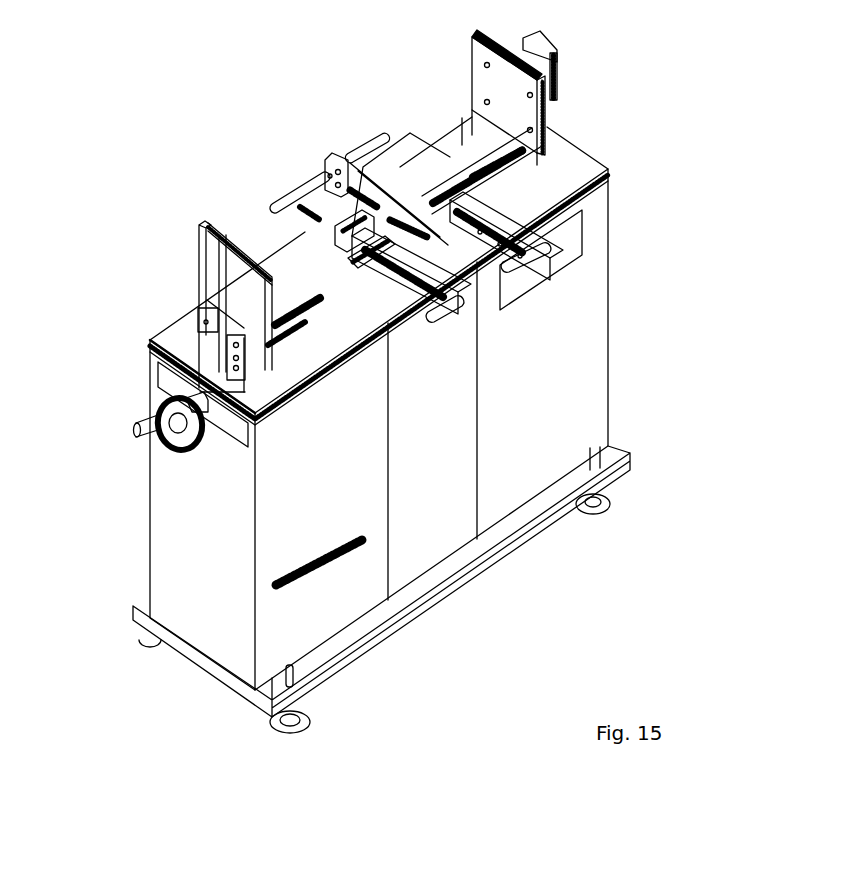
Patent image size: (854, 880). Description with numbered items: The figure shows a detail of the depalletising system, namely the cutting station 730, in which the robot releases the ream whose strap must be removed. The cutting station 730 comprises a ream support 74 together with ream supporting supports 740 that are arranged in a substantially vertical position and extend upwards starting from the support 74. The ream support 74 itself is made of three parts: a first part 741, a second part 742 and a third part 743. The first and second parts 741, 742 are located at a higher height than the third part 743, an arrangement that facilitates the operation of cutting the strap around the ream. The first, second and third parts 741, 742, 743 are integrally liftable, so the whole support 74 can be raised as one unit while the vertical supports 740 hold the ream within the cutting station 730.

The cutting station 730 is at (118, 120).
The ream supporting supports 740 is at (445, 226).
The first part of the support 741 is at (318, 212).
The third part of the support 743 is at (337, 238).
The second part of the support 742 is at (344, 251).
The ream support 74 is at (324, 267).